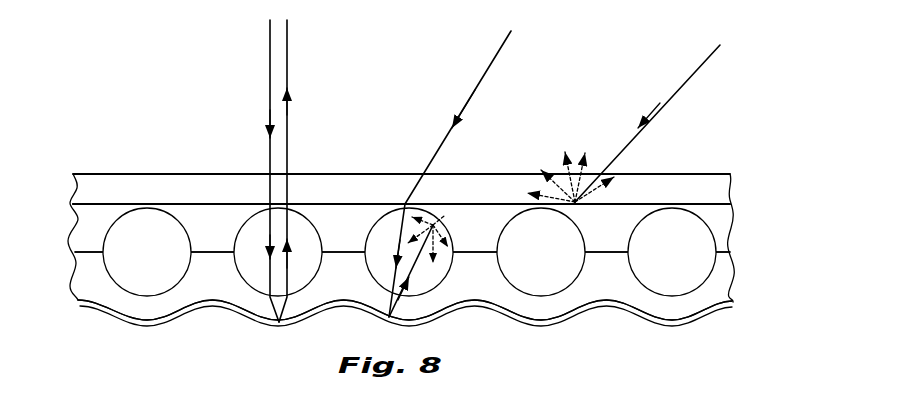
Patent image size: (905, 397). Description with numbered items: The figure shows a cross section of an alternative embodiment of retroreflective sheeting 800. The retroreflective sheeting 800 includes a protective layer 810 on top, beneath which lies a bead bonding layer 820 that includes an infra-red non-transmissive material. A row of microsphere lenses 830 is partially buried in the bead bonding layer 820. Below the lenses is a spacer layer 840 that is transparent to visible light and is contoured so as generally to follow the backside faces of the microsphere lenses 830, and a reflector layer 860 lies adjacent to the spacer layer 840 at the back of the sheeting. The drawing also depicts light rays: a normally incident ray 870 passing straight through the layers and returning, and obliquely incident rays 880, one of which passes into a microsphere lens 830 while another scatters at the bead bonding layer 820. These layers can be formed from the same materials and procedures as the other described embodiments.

The retroreflective sheeting 800 is at (434, 201).
The protective layer 810 is at (717, 191).
The bead bonding layer 820 is at (718, 227).
The microsphere lenses 830 is at (672, 227).
The spacer layer 840 is at (720, 275).
The reflector layer 860 is at (717, 312).
The normal incident light ray and reflected ray 870 is at (270, 63).
The oblique incident light rays 880 is at (482, 73).